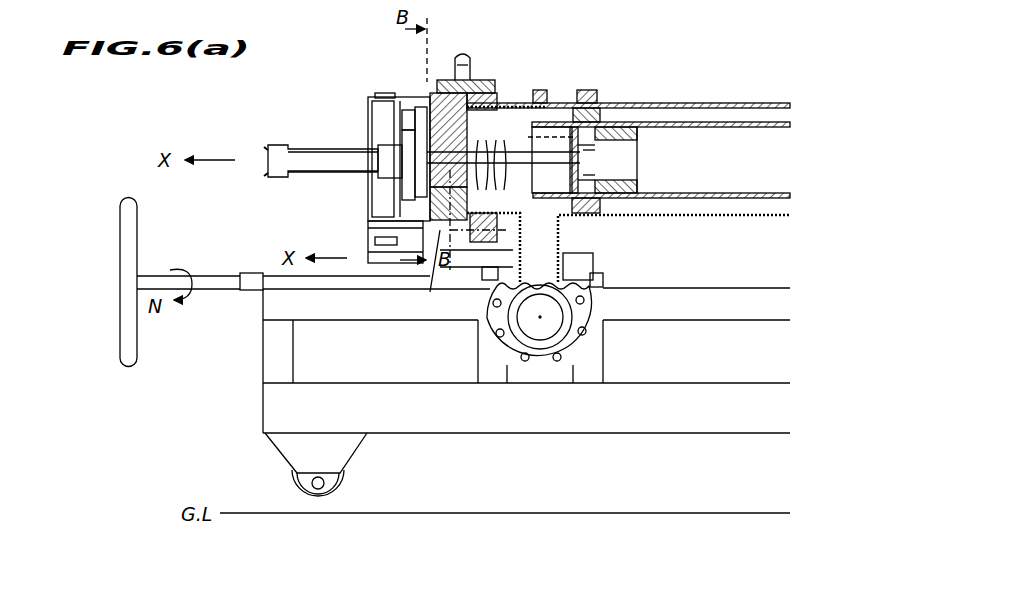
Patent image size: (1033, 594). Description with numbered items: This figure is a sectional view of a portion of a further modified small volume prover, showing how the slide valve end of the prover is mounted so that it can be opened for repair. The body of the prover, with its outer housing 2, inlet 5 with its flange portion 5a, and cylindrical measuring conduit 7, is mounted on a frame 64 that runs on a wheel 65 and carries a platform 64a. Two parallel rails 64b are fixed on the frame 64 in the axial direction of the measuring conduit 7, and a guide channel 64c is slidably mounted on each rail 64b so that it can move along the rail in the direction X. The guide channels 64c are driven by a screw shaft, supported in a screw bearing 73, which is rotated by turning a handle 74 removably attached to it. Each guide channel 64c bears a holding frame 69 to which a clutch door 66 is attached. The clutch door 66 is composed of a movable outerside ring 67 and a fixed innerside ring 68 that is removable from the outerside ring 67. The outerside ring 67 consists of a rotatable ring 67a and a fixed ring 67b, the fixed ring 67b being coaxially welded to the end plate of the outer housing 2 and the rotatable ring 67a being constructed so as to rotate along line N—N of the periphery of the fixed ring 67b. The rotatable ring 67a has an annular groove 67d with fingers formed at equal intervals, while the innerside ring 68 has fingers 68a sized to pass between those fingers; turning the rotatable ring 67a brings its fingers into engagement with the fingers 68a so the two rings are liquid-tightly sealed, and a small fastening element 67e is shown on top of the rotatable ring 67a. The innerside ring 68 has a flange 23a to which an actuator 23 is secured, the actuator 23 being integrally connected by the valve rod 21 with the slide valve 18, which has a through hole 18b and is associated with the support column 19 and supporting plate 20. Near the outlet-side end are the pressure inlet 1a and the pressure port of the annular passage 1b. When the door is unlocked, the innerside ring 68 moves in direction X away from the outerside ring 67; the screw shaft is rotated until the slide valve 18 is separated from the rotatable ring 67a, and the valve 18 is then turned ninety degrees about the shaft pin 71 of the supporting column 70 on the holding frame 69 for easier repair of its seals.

The pressure inlet 1a is at (540, 88).
The pressure port of annular passage 1b is at (581, 88).
The outer housing 2 is at (725, 102).
The inlet 5 is at (556, 334).
The flange opening 5a is at (590, 319).
The cylindrical measuring conduit 7 is at (734, 128).
The slide valve 18 is at (630, 126).
The through hole 18b is at (608, 200).
The support column 19 is at (585, 178).
The supporting plate 20 is at (585, 152).
The valve rod 21 is at (475, 150).
The valve actuator 23 is at (304, 144).
The flange 23a is at (425, 170).
The frame 64 is at (749, 293).
The platform 64a is at (577, 258).
The rails 64b is at (282, 290).
The guide channel 64c is at (600, 275).
The wheel 65 is at (340, 494).
The clutch door 66 is at (485, 44).
The movable outerside ring 67 is at (470, 243).
The rotatable ring 67a is at (508, 92).
The fixed ring 67b is at (512, 137).
The annular groove 67d is at (478, 82).
The set screw 67e is at (463, 57).
The fixed innerside ring 68 is at (432, 240).
The fingers 68a is at (430, 93).
The holding frame 69 is at (408, 94).
The supporting column 70 is at (386, 116).
The shaft pin 71 is at (388, 95).
The screw bearing 73 is at (480, 282).
The handle 74 is at (140, 347).